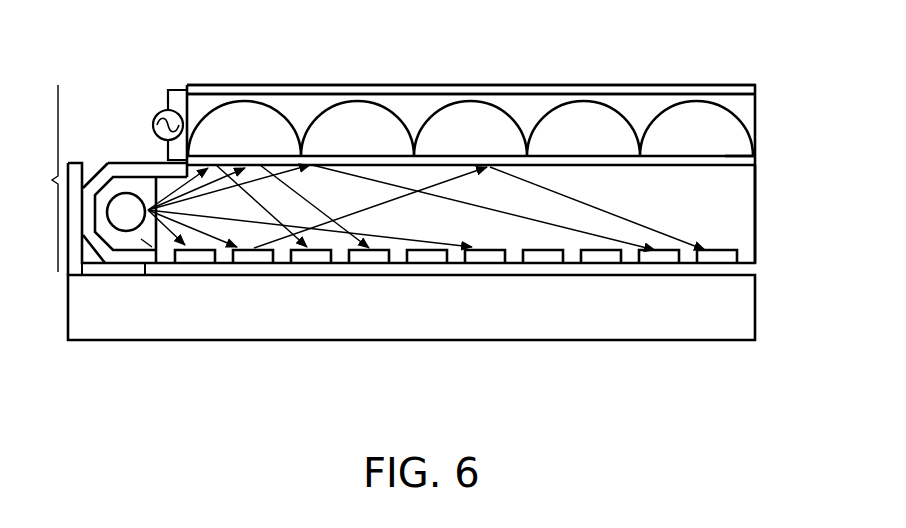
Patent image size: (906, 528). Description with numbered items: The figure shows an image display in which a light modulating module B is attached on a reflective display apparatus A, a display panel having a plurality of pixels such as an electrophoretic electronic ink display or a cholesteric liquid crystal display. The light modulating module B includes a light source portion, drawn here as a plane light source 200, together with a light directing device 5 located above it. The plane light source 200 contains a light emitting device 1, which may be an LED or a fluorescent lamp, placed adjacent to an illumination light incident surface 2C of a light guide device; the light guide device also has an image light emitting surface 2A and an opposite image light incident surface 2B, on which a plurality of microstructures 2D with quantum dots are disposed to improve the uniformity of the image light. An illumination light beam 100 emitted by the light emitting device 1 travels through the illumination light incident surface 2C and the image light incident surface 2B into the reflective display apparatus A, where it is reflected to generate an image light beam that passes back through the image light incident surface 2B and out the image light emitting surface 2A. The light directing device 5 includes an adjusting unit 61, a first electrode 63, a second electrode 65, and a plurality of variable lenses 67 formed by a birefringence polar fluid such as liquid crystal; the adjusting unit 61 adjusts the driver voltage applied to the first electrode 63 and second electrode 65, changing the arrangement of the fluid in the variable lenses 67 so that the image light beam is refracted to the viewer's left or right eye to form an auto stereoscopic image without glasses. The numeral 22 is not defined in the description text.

The light emitting device 1 is at (118, 226).
The light directing device 5 is at (490, 141).
The chamber of housing 22 is at (696, 225).
The adjusting unit 61 is at (153, 115).
The first electrode 63 is at (542, 157).
The second electrode 65 is at (657, 96).
The variable lenses 67 is at (696, 117).
The illumination light beam 100 is at (383, 255).
The plane light source 200 is at (757, 213).
The image light emitting surface 2A is at (737, 156).
The image light incident surface 2B is at (728, 265).
The illumination light incident surface 2C is at (160, 265).
The microstructures 2D is at (645, 265).
The reflective display apparatus A is at (757, 307).
The light modulating module B is at (43, 178).